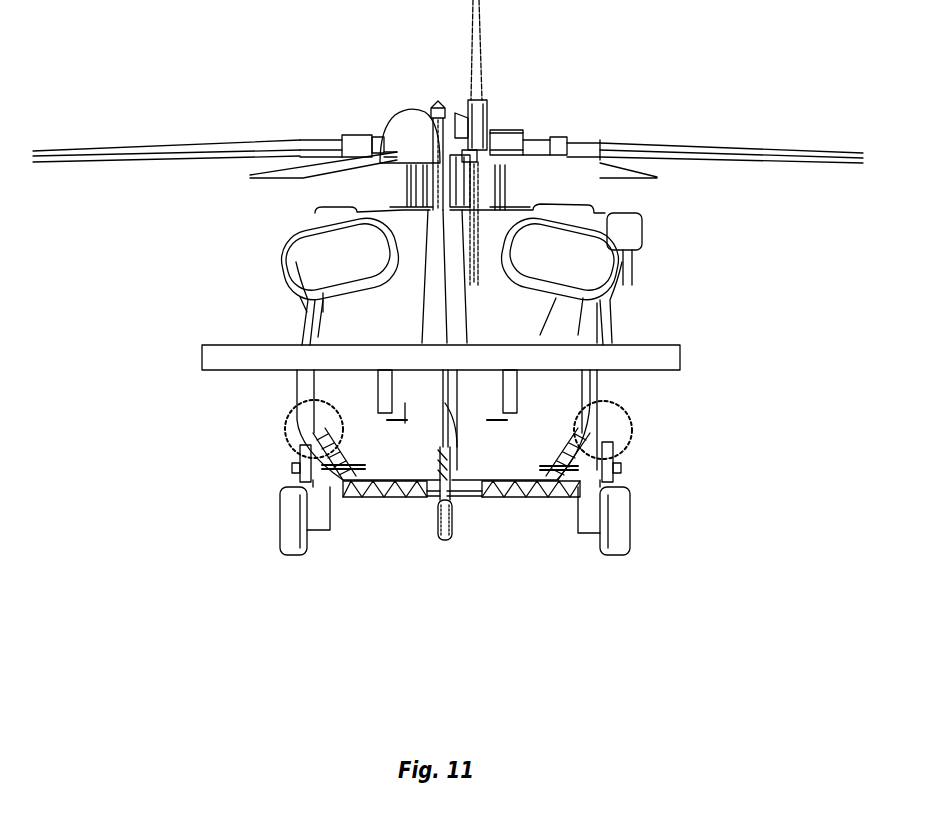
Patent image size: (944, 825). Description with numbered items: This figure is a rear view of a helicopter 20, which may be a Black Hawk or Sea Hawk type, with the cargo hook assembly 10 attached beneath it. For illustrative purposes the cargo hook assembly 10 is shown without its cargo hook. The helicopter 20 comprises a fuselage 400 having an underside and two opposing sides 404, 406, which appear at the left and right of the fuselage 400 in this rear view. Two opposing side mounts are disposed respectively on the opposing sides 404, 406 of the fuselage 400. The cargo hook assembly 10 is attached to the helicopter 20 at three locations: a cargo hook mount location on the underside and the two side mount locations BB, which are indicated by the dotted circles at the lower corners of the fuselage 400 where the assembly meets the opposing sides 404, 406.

The cargo hook assembly 10 is at (487, 490).
The helicopter 20 is at (480, 90).
The fuselage 400 is at (493, 342).
The opposing side of the fuselage 404 is at (614, 343).
The opposing side of the fuselage 406 is at (303, 340).
The side mount location BB is at (287, 432).